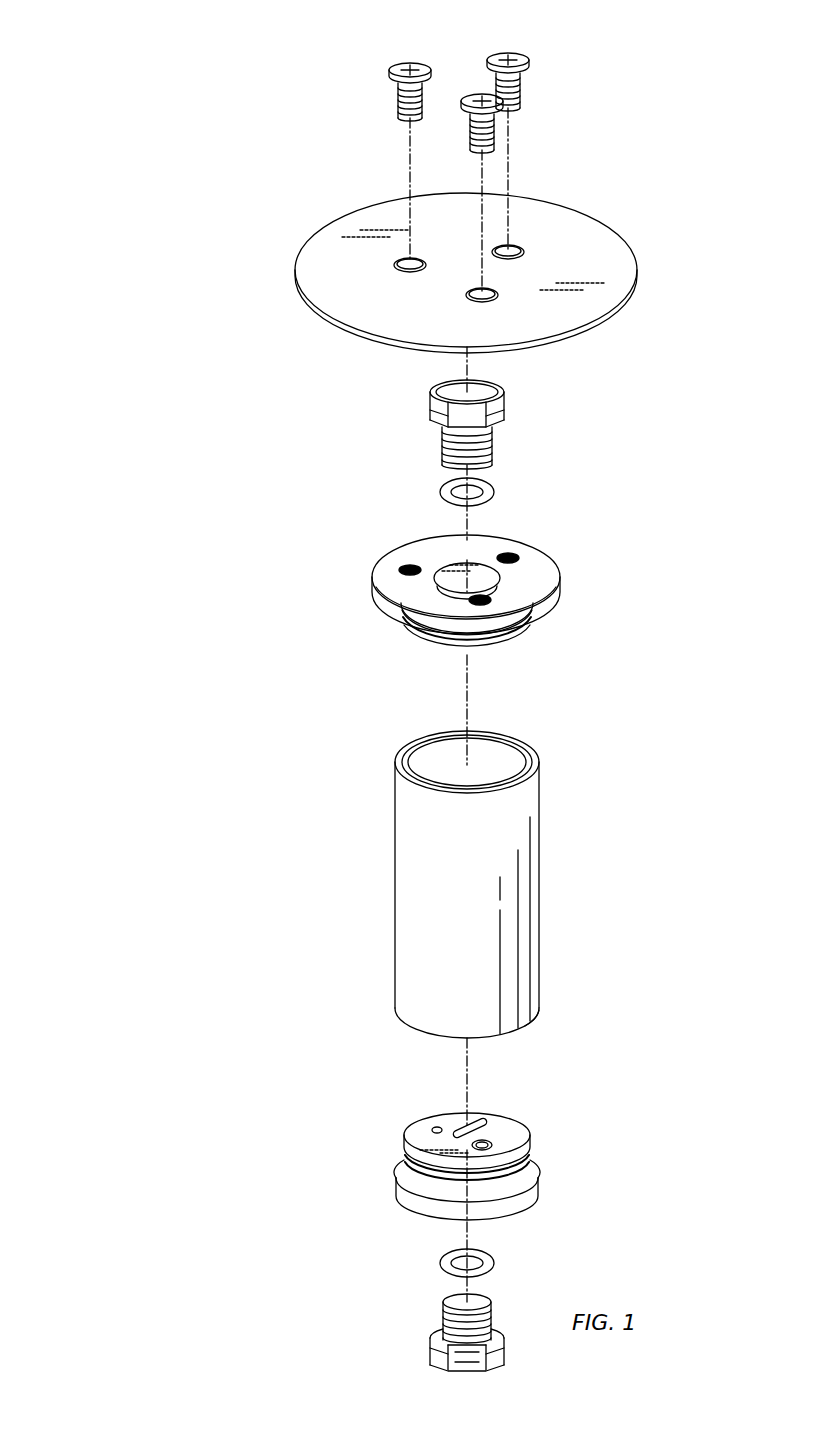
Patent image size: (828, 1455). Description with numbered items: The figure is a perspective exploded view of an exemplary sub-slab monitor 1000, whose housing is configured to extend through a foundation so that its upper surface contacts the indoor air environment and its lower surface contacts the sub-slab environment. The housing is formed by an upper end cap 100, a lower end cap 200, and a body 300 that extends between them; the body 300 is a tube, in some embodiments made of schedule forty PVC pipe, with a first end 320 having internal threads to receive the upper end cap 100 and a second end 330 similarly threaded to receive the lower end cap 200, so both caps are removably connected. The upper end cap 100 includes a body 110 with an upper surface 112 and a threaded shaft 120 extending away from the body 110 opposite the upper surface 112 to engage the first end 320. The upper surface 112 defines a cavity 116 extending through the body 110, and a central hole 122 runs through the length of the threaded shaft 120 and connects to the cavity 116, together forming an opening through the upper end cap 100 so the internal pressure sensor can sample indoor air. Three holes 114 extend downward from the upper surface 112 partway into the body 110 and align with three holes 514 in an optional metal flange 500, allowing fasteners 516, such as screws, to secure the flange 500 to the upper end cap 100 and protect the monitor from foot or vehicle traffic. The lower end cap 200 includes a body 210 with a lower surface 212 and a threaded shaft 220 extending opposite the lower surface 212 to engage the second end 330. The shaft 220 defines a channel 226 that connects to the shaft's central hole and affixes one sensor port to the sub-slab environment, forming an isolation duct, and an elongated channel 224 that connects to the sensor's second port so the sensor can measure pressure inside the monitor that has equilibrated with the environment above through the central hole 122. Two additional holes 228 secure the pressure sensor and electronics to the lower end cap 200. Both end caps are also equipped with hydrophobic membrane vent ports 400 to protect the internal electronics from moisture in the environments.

The sub-slab monitor 1000 is at (193, 140).
The fasteners 516 is at (505, 55).
The holes 514 is at (410, 260).
The metal flange 500 is at (295, 282).
The hydrophobic membrane vent ports 400 is at (430, 405).
The central hole 122 is at (458, 590).
The upper end cap 100 is at (443, 584).
The body 110 is at (372, 592).
The upper surface 112 is at (540, 570).
The cavity 116 is at (440, 577).
The holes 114 is at (508, 558).
The threaded shaft 120 is at (525, 640).
The body 300 is at (471, 870).
The first end 320 is at (538, 762).
The second end 330 is at (540, 1018).
The lower end cap 200 is at (462, 1176).
The threaded shaft 220 is at (527, 1135).
The elongated channel 224 is at (463, 1128).
The channel 226 is at (488, 1140).
The holes 228 is at (437, 1130).
The body 210 is at (535, 1168).
The lower surface 212 is at (505, 1220).